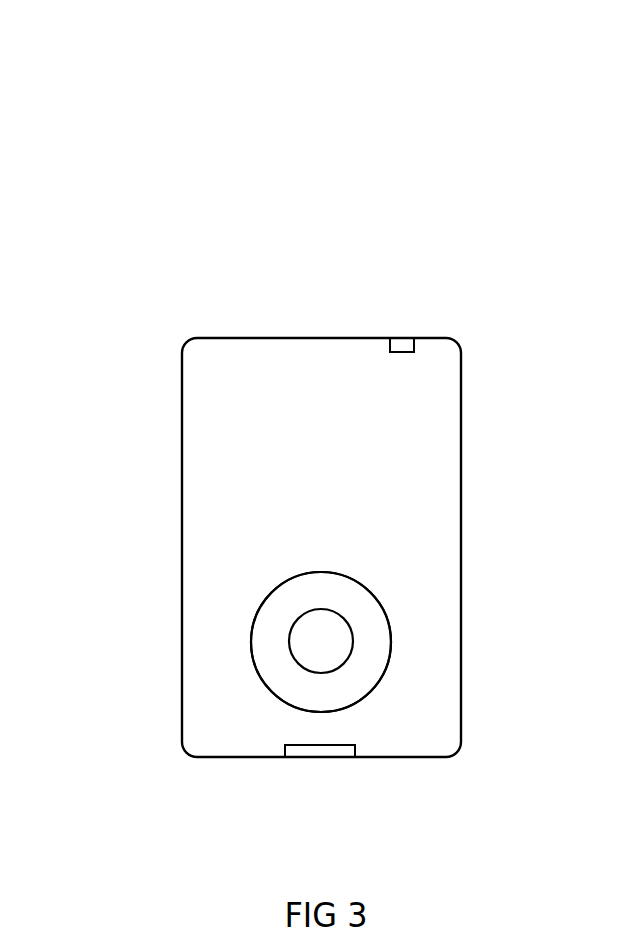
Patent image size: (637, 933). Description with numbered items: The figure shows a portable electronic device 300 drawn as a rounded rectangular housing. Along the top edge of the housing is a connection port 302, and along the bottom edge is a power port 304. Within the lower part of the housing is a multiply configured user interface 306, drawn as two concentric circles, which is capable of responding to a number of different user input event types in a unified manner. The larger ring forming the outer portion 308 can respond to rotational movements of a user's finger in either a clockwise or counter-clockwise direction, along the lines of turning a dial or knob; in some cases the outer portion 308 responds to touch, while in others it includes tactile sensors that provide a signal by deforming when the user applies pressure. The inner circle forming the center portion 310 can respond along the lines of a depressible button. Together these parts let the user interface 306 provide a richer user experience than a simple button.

The portable electronic device 300 is at (124, 113).
The connection port 302 is at (402, 322).
The power port 304 is at (326, 772).
The multiply configured user interface 306 is at (224, 681).
The outer portion 308 is at (321, 642).
The center portion 310 is at (321, 641).